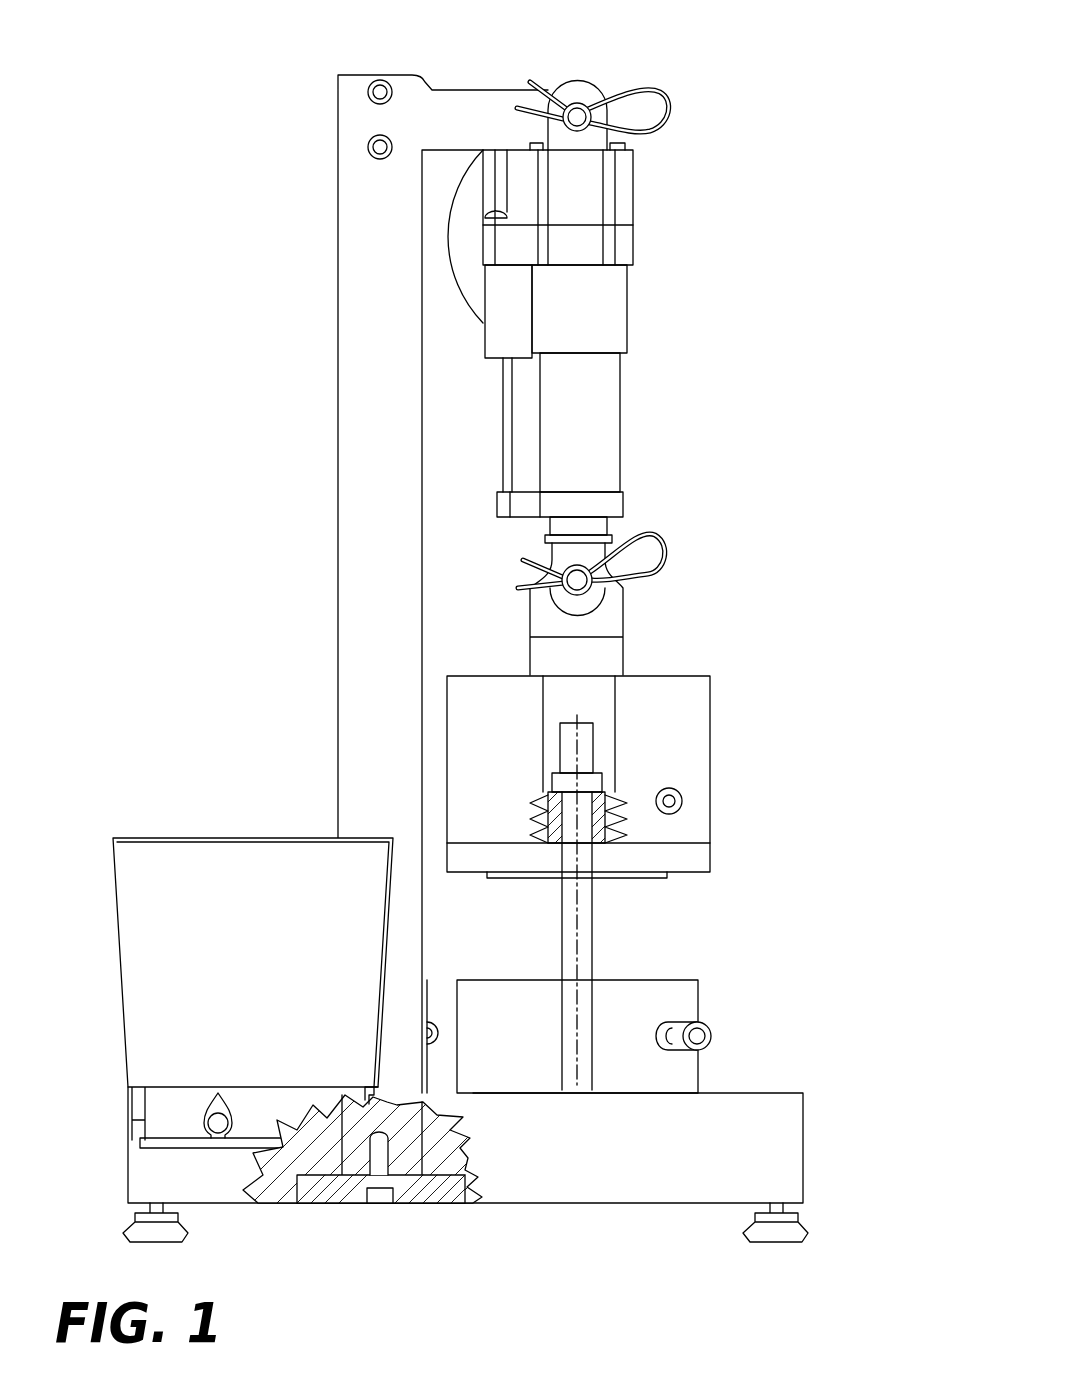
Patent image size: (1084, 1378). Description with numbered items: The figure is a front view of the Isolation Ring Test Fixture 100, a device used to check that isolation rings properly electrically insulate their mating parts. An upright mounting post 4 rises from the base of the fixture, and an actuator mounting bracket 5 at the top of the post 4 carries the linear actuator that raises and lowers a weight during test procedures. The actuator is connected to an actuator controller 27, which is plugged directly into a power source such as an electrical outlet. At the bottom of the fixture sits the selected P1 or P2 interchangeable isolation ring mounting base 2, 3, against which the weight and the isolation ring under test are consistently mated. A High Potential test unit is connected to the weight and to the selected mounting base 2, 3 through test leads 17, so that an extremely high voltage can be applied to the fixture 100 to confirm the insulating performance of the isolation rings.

The Isolation Ring Test Fixture 100 is at (793, 347).
The actuator mounting bracket 5 is at (498, 87).
The mounting post 4 is at (328, 772).
The actuator controller 27 is at (102, 890).
The P1 interchangeable base 2 is at (707, 1003).
The P2 interchangeable base 3 is at (577, 1036).
The test leads 17 is at (708, 1037).